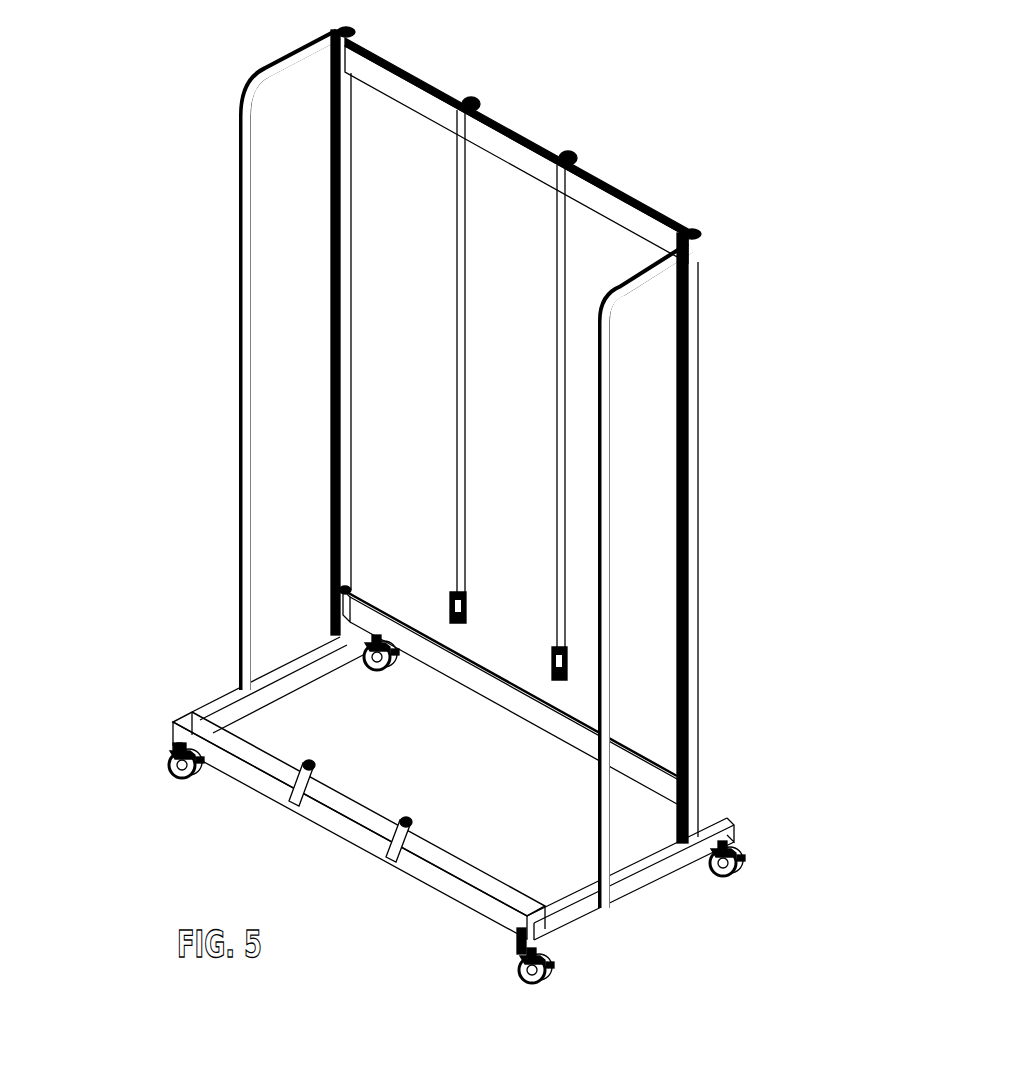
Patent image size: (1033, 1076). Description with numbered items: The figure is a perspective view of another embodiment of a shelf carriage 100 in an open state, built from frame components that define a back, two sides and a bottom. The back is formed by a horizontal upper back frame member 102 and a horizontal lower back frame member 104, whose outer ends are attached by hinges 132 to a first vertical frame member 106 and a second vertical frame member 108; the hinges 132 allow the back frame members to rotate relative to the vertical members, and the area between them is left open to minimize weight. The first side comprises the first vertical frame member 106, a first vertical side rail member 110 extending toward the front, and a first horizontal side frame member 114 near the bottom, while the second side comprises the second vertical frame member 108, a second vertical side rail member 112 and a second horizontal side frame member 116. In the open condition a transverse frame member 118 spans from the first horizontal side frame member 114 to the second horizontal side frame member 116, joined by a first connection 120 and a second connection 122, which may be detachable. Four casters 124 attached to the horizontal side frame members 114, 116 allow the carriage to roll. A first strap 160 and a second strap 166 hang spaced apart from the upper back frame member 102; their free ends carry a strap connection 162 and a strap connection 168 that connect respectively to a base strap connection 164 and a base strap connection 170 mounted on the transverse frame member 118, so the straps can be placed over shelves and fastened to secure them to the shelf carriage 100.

The shelf carriage 100 is at (186, 47).
The upper back frame member 102 is at (516, 150).
The lower back frame member 104 is at (510, 689).
The first vertical frame member 106 is at (343, 241).
The second vertical frame member 108 is at (701, 596).
The first vertical side rail member 110 is at (236, 448).
The second vertical side rail member 112 is at (607, 375).
The first horizontal side frame member 114 is at (298, 690).
The second horizontal side frame member 116 is at (643, 890).
The transverse frame member 118 is at (252, 758).
The first connection 120 is at (172, 721).
The second connection 122 is at (514, 934).
The casters 124 is at (393, 676).
The hinges 132 is at (357, 32).
The first strap 160 is at (500, 326).
The strap connection 162 is at (465, 600).
The base strap connection 164 is at (314, 766).
The second strap 166 is at (571, 154).
The strap connection 168 is at (551, 652).
The base strap connection 170 is at (410, 822).